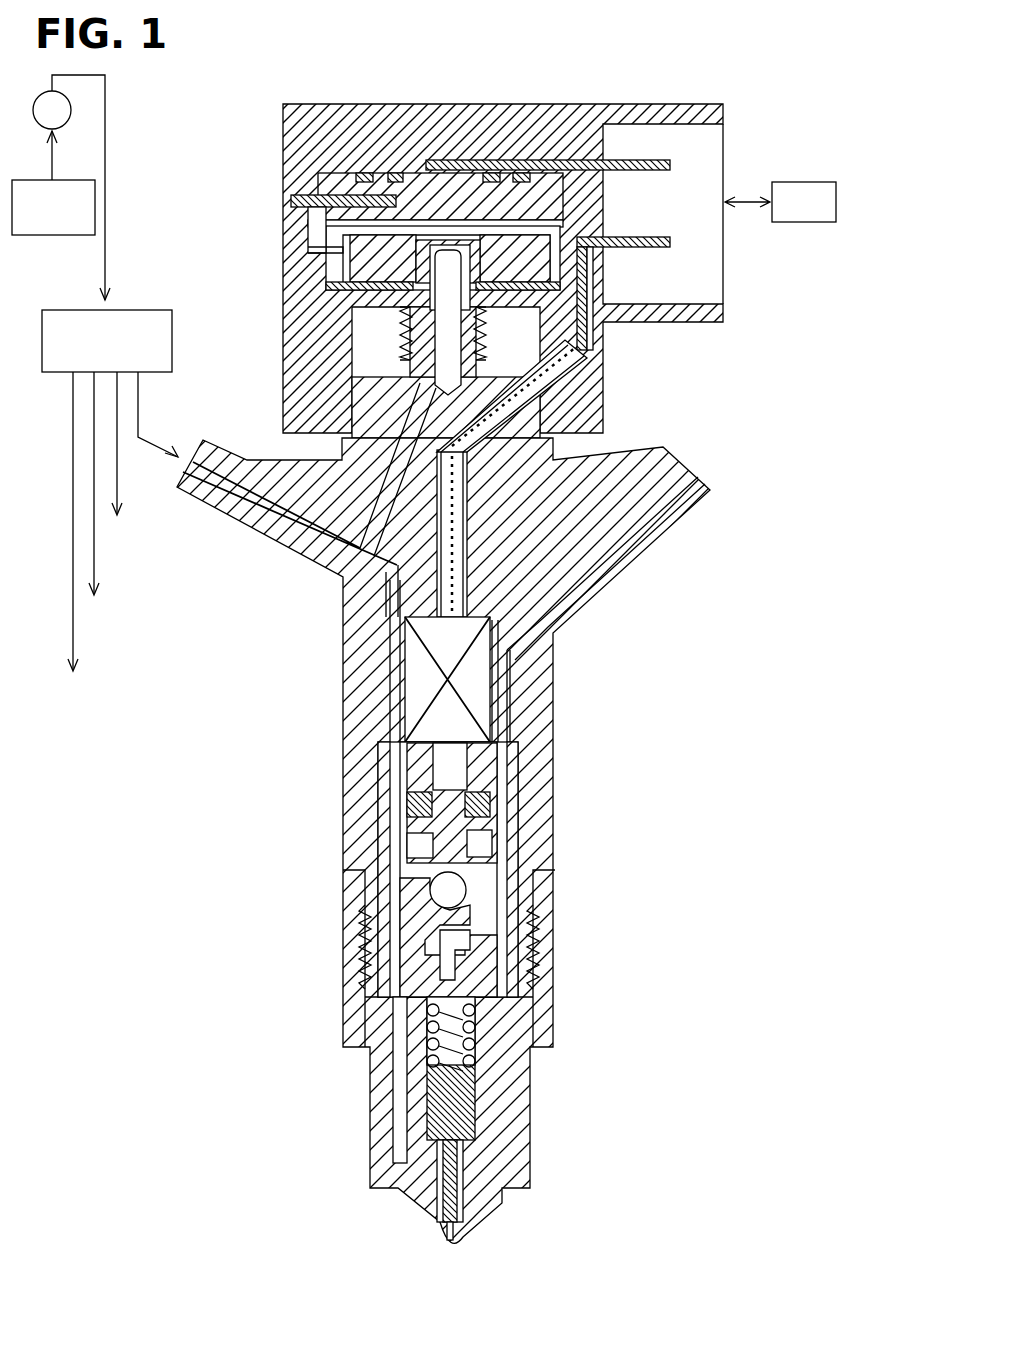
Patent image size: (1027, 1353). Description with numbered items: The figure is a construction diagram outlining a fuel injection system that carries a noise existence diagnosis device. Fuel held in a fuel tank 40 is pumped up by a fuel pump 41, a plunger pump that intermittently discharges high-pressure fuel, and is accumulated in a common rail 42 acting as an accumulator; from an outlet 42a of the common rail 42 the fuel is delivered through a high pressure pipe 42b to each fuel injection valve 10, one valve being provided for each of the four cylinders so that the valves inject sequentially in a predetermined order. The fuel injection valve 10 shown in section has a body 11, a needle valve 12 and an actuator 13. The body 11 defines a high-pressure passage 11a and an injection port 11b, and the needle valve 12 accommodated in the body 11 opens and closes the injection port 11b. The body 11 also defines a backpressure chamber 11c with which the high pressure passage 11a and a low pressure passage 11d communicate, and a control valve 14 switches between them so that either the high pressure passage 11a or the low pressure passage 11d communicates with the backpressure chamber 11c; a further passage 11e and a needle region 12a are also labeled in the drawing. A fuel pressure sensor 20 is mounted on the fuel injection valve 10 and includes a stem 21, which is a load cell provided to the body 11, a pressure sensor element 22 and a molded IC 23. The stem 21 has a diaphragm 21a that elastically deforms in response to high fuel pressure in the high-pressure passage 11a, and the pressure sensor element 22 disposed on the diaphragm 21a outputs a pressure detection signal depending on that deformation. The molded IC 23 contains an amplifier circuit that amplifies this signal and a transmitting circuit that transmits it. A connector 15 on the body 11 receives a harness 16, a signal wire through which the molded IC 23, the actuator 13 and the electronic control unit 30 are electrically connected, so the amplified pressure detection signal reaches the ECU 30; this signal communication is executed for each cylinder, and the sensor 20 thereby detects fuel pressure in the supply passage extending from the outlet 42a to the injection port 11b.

The fuel injection valve 10 is at (87, 738).
The body 11 is at (446, 801).
The high-pressure passage 11a is at (263, 515).
The injection port 11b is at (462, 1240).
The backpressure chamber 11c is at (462, 995).
The low pressure passage 11d is at (617, 530).
The high pressure passage 11e is at (288, 455).
The needle valve 12 is at (463, 1106).
The needle seat 12a is at (440, 1217).
The actuator 13 is at (425, 695).
The control valve 14 is at (450, 888).
The connector 15 is at (769, 109).
The harness 16 is at (748, 205).
The fuel pressure sensor 20 is at (469, 257).
The stem 21 is at (417, 318).
The diaphragm 21a is at (462, 302).
The pressure sensor element 22 is at (432, 165).
The molded IC 23 is at (532, 240).
The electronic control unit 30 is at (802, 182).
The fuel tank 40 is at (55, 236).
The fuel pump 41 is at (66, 128).
The common rail 42 is at (150, 310).
The outlet 42a is at (143, 373).
The high pressure pipe 42b is at (140, 418).